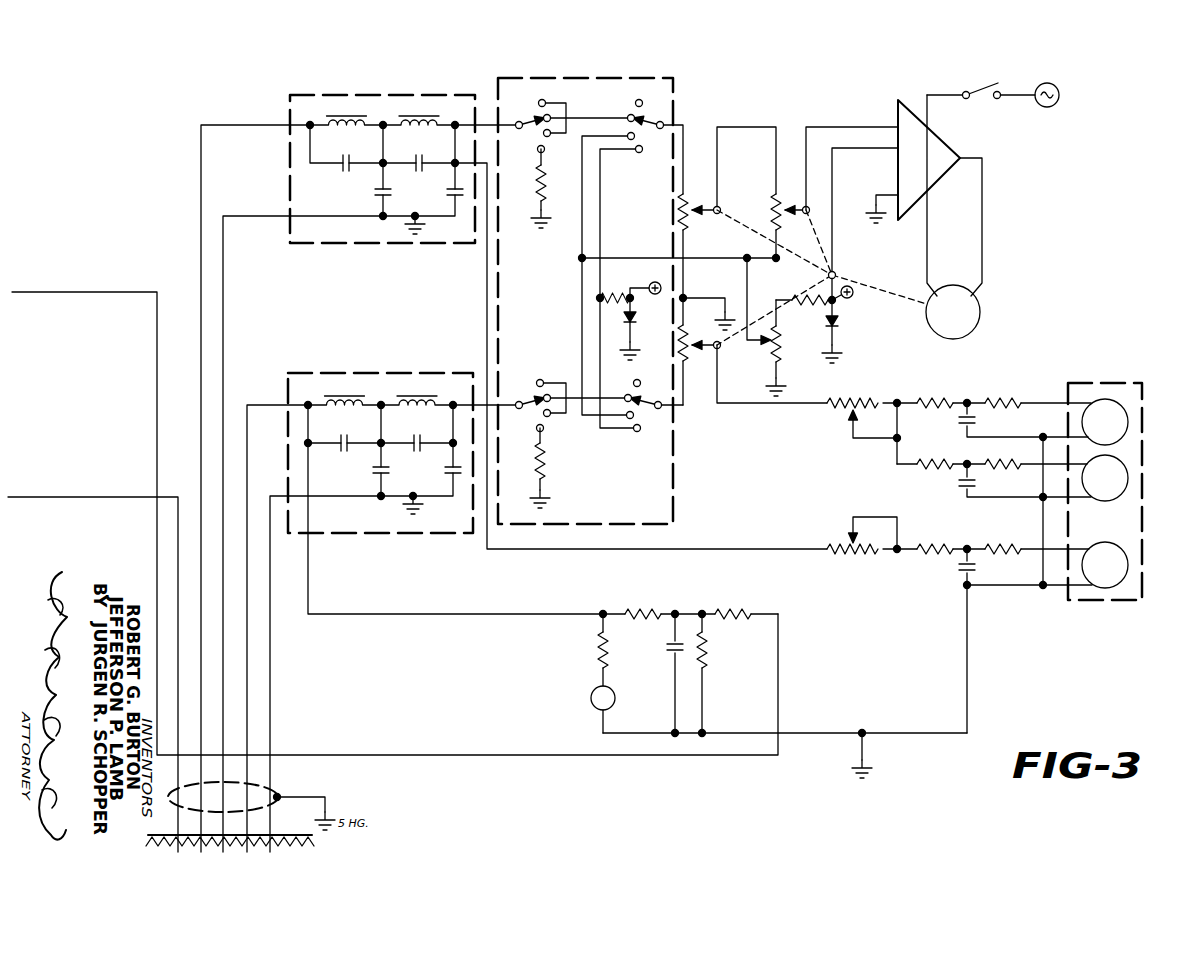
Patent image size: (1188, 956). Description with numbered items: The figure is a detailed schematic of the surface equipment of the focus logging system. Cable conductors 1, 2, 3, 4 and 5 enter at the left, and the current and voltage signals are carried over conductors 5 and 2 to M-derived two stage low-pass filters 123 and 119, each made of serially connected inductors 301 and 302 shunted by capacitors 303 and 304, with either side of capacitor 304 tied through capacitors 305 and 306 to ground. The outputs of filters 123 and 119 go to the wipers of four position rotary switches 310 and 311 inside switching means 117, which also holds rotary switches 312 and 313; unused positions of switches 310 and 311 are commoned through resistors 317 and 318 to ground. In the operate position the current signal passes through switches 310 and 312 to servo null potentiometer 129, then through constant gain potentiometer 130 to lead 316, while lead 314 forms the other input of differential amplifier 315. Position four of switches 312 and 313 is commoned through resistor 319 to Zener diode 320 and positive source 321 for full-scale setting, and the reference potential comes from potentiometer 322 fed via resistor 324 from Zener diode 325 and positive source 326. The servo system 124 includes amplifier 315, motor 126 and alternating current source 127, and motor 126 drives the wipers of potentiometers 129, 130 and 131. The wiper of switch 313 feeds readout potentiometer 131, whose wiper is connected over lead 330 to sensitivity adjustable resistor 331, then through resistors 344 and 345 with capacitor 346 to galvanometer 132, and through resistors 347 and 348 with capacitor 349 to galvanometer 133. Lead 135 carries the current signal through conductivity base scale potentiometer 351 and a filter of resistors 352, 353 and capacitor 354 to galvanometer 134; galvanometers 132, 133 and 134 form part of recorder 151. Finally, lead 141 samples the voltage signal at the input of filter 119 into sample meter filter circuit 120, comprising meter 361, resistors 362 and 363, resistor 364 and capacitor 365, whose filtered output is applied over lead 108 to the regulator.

The conductor 1 is at (66, 497).
The conductor 2 is at (266, 404).
The conductor 3 is at (271, 635).
The conductor 4 is at (226, 343).
The conductor 5 is at (248, 124).
The lead 108 is at (74, 292).
The switching means 117 is at (674, 79).
The low-pass filter 119 is at (354, 376).
The sample meter filter circuit 120 is at (785, 721).
The low-pass filter 123 is at (377, 100).
The servo system 124 is at (978, 195).
The motor 126 is at (980, 309).
The source of alternating current 127 is at (1054, 89).
The linear potentiometer 129 is at (706, 198).
The linear potentiometer 130 is at (768, 205).
The linear potentiometer 131 is at (692, 362).
The galvanometer 132 is at (1119, 411).
The galvanometer 133 is at (1119, 473).
The galvanometer 134 is at (1119, 561).
The lead 135 is at (797, 549).
The lead 141 is at (515, 615).
The recorder 151 is at (1083, 381).
The inductor 301 is at (355, 152).
The inductor 302 is at (428, 152).
The capacitor 303 is at (342, 169).
The capacitor 304 is at (422, 166).
The capacitor 305 is at (374, 193).
The capacitor 306 is at (452, 192).
The four position rotary switch 310 is at (535, 120).
The four position rotary switch 311 is at (531, 393).
The rotary switch 312 is at (659, 112).
The rotary switch 313 is at (660, 430).
The lead 314 is at (842, 161).
The differential amplifier 315 is at (941, 145).
The lead 316 is at (873, 127).
The resistor 317 is at (540, 186).
The resistor 318 is at (545, 460).
The resistor 319 is at (603, 298).
The Zener diode 320 is at (645, 329).
The positive source 321 is at (661, 289).
The potentiometer 322 is at (781, 351).
The resistor 324 is at (810, 296).
The Zener diode 325 is at (841, 330).
The positive source 326 is at (850, 289).
The lead 330 is at (766, 405).
The sensitivity adjustable resistor 331 is at (876, 398).
The resistor 344 is at (951, 398).
The resistor 345 is at (1021, 398).
The capacitor 346 is at (961, 423).
The resistor 347 is at (946, 472).
The resistor 348 is at (984, 463).
The capacitor 349 is at (963, 487).
The conductivity base scale setting potentiometer 351 is at (856, 558).
The resistor 352 is at (938, 560).
The resistor 353 is at (1010, 550).
The capacitor 354 is at (963, 580).
The meter 361 is at (591, 701).
The resistor 362 is at (659, 613).
The resistor 363 is at (735, 612).
The resistor 364 is at (711, 652).
The capacitor 365 is at (670, 649).